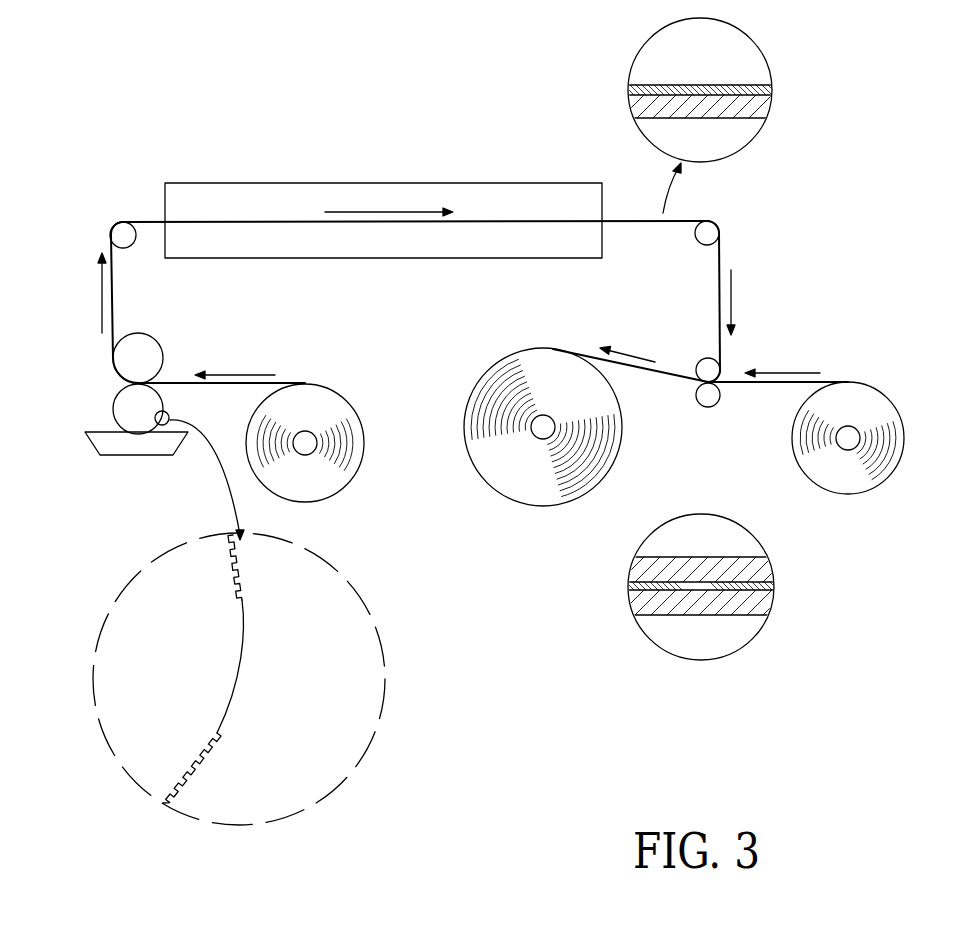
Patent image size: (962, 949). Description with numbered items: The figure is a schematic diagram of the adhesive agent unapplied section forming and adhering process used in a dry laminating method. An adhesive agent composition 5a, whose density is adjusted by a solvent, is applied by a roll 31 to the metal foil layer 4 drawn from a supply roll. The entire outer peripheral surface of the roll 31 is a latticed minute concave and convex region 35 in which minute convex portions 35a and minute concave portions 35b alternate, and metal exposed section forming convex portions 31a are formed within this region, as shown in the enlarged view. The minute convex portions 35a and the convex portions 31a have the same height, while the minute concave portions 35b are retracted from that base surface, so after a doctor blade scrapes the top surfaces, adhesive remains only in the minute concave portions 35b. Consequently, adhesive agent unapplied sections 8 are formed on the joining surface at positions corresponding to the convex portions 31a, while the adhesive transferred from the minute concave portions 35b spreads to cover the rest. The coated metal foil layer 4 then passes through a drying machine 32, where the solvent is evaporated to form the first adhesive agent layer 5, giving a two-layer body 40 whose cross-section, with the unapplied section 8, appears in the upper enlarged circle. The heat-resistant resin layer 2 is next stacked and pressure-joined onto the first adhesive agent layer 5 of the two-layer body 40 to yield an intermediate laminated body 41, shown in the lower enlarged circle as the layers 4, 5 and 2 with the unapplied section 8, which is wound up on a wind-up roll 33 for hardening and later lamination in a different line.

The heat-resistant resin layer 2 is at (880, 402).
The metal foil layer 4 is at (332, 405).
The first adhesive agent layer 5 is at (770, 90).
The adhesive agent composition 5a is at (105, 438).
The adhesive agent unapplied section 8 is at (700, 87).
The roll 31 is at (112, 408).
The metal exposed section forming convex portion 31a is at (244, 653).
The drying machine 32 is at (462, 250).
The wind-up roll 33 is at (532, 490).
The minute concave and convex region 35 is at (246, 568).
The minute convex portion 35a is at (218, 740).
The minute concave portion 35b is at (217, 735).
The two-layer body 40 is at (722, 252).
The intermediate laminated body 41 is at (678, 505).